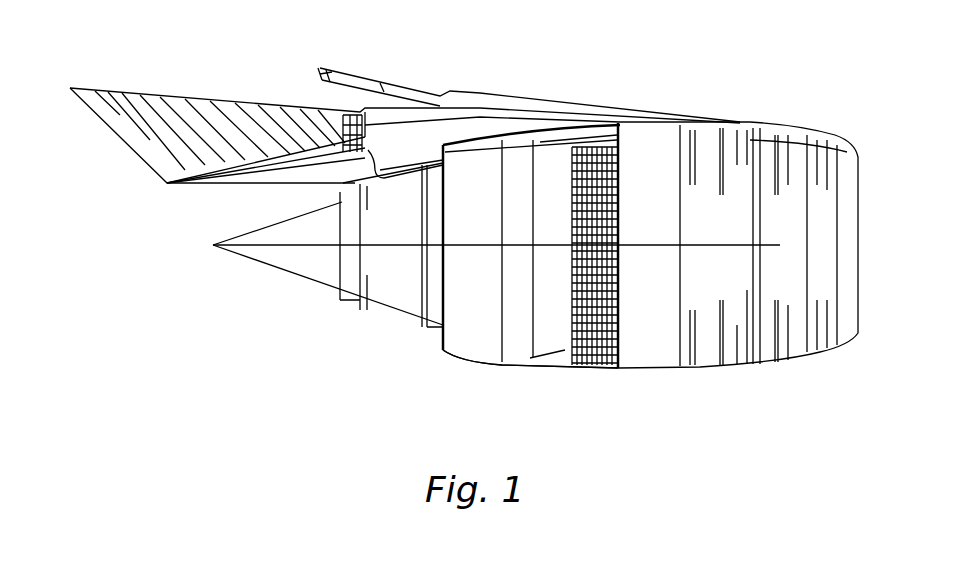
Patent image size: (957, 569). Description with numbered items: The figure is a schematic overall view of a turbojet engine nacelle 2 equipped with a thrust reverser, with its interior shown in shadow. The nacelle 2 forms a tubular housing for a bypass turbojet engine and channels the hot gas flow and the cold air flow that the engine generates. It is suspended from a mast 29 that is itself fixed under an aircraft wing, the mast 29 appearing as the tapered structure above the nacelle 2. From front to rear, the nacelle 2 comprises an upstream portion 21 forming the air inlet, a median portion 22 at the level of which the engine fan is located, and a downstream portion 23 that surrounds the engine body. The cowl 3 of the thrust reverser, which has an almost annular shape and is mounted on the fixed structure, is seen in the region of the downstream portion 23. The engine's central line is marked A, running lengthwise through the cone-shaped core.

The nacelle 2 is at (650, 243).
The cowl 3 is at (478, 338).
The upstream portion 21 is at (800, 366).
The median portion 22 is at (708, 372).
The downstream portion 23 is at (521, 372).
The mast 29 is at (565, 97).
The longitudinal axis A is at (276, 247).